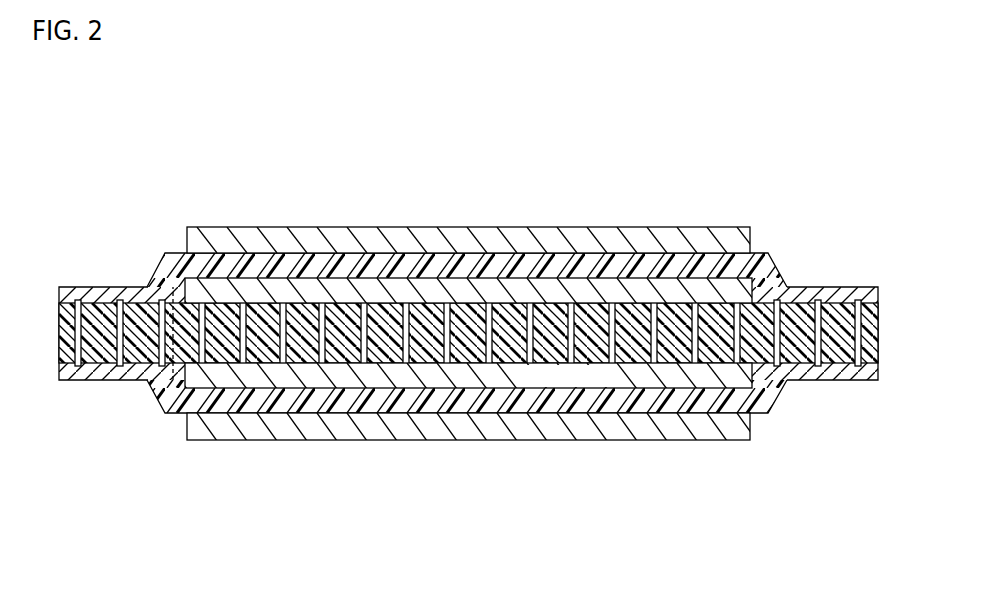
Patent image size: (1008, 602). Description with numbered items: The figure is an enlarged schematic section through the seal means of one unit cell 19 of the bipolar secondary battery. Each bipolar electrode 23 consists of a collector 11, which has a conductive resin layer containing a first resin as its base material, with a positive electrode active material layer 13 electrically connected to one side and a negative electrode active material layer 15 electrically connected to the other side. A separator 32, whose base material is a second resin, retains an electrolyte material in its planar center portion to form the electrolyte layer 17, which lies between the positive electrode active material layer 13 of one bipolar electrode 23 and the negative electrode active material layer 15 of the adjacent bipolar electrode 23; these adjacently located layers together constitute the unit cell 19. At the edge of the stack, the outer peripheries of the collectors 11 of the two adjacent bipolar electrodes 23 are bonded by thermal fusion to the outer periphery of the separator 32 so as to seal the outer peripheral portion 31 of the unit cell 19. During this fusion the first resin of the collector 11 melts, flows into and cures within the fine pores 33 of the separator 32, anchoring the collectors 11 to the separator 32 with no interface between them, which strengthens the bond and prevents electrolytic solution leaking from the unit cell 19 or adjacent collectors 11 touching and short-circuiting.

The collector 11 is at (661, 264).
The positive electrode active material layer 13 is at (696, 245).
The negative electrode active material layer 15 is at (627, 292).
The electrolyte layer 17 is at (561, 310).
The unit cell 19 is at (170, 327).
The bipolar electrode 23 is at (467, 340).
The outer peripheral portion 31 is at (165, 257).
The separator 32 is at (613, 388).
The fine pores 33 is at (160, 368).